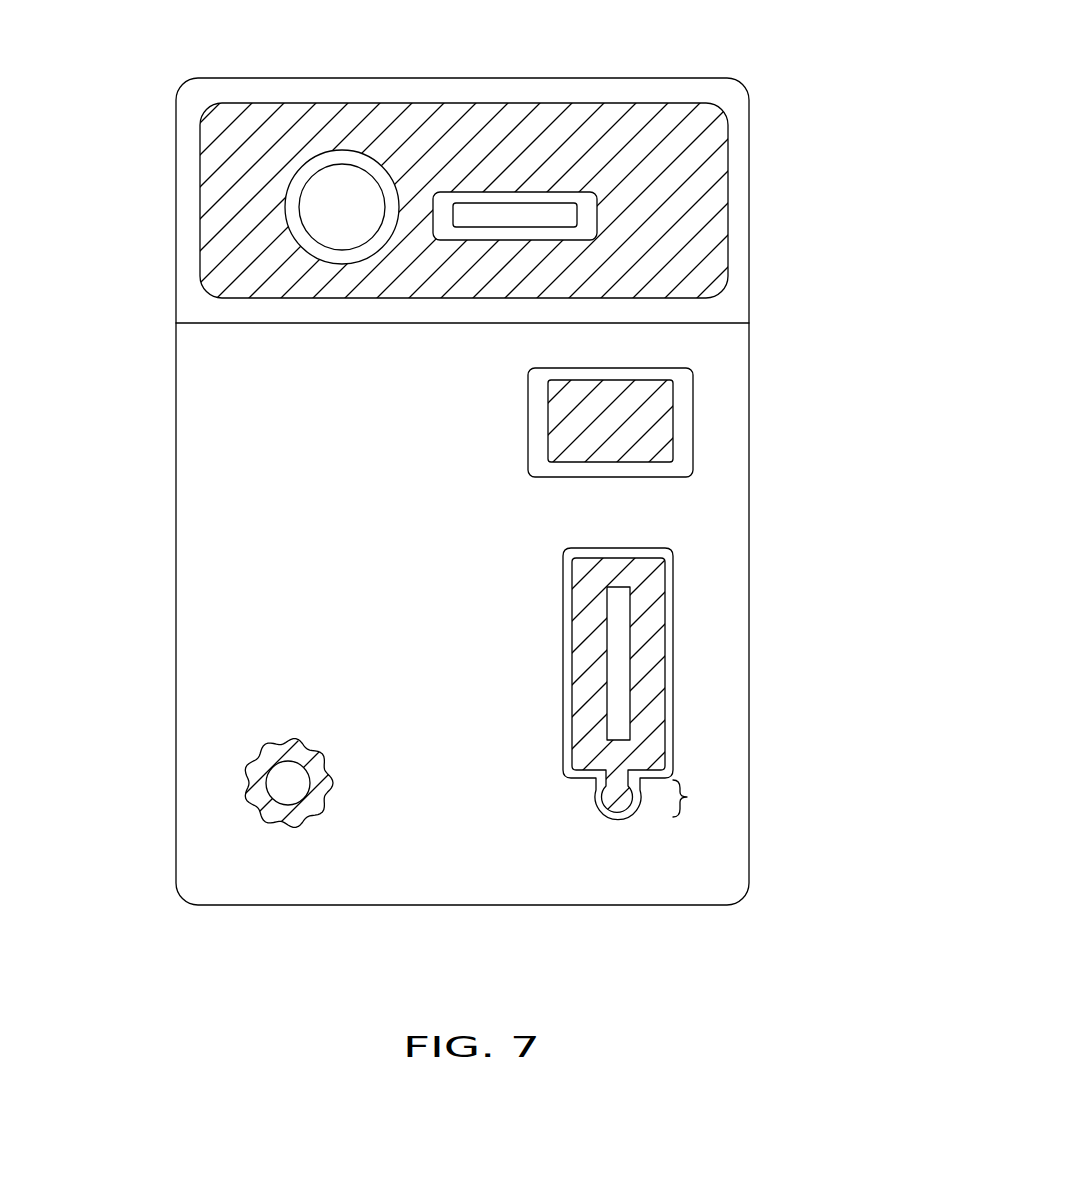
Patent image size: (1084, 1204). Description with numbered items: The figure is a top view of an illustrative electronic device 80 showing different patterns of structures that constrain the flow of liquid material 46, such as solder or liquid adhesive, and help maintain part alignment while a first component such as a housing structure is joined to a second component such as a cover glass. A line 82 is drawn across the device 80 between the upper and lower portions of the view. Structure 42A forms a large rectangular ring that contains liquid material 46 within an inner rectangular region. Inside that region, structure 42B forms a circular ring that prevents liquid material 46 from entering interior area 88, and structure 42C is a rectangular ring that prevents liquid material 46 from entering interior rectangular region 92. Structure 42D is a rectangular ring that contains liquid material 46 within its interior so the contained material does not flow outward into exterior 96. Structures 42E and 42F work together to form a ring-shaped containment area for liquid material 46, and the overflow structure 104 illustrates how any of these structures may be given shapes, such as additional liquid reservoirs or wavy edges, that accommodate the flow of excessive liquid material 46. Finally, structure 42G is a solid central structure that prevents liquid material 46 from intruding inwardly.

The electronic device 80 is at (854, 77).
The dividing line / edge 82 is at (442, 313).
The rectangular ring structure 42A is at (477, 93).
The circular ring structure 42B is at (332, 157).
The interior area 88 is at (345, 138).
The rectangular ring structure 42C is at (543, 195).
The interior rectangular region 92 is at (564, 127).
The rectangular ring structure 42D is at (685, 408).
The liquid material 46 is at (687, 122).
The exterior 96 is at (653, 678).
The structure 42E is at (612, 622).
The structure 42F is at (668, 740).
The overflow structure 104 is at (687, 797).
The solid central structure 42G is at (302, 790).